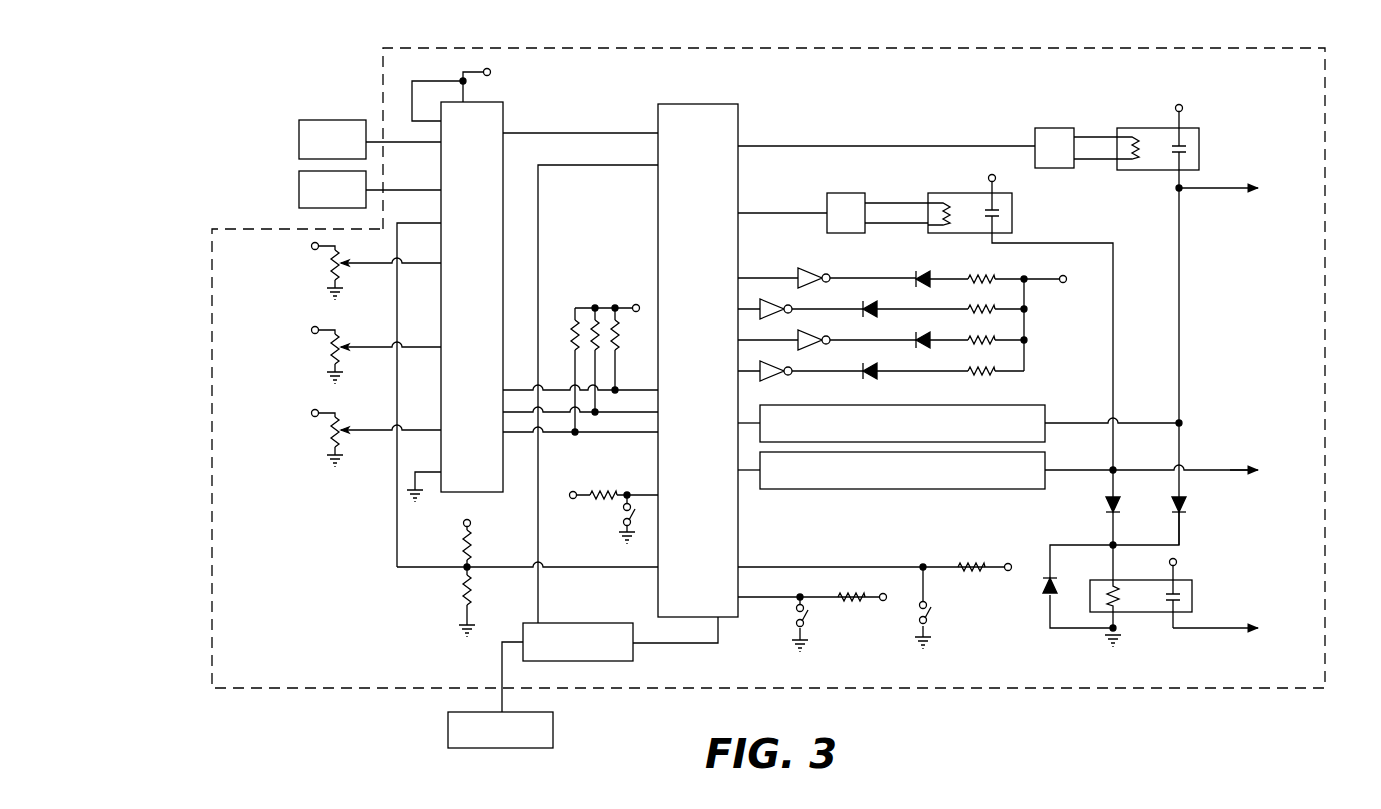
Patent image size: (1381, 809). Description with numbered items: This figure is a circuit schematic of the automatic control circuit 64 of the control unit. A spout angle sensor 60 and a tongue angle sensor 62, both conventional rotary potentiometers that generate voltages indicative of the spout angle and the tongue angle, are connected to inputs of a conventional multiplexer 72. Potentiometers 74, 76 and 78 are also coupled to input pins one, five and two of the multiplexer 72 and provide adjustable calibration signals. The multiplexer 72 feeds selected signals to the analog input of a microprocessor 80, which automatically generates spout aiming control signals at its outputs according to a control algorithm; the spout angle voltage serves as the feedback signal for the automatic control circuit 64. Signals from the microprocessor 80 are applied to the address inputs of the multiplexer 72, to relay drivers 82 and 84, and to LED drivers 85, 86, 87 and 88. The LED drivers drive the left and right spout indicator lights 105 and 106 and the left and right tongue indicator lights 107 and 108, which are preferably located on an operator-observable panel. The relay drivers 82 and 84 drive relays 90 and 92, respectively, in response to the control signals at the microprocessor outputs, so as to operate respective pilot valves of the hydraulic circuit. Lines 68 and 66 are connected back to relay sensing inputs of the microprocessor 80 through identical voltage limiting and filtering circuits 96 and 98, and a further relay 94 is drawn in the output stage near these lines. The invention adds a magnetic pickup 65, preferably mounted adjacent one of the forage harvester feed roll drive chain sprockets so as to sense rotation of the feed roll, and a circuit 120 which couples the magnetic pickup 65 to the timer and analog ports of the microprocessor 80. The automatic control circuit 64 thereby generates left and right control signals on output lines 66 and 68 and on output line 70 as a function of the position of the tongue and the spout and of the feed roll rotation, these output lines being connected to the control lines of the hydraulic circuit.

The spout angle sensor 60 is at (303, 120).
The tongue angle sensor 62 is at (299, 189).
The automatic control circuit 64 is at (1325, 368).
The magnetic pickup 65 is at (543, 712).
The output line 66 is at (1195, 470).
The output line 68 is at (1200, 188).
The output line 70 is at (1222, 636).
The multiplexer 72 is at (506, 103).
The potentiometer 74 is at (315, 272).
The potentiometer 76 is at (315, 355).
The potentiometer 78 is at (315, 438).
The microprocessor 80 is at (738, 106).
The relay driver 82 is at (1060, 128).
The relay driver 84 is at (850, 193).
The LED driver 85 is at (812, 268).
The LED driver 86 is at (770, 299).
The LED driver 87 is at (812, 330).
The LED driver 88 is at (770, 361).
The relay 90 is at (1199, 130).
The relay 92 is at (1008, 193).
The relay 94 is at (1192, 596).
The voltage limiting and filtering circuit 96 is at (1045, 410).
The voltage limiting and filtering circuit 98 is at (1045, 489).
The left spout indicator light 105 is at (920, 270).
The right spout indicator light 106 is at (876, 302).
The left tongue indicator light 107 is at (920, 332).
The right tongue indicator light 108 is at (876, 364).
The circuit 120 is at (596, 623).